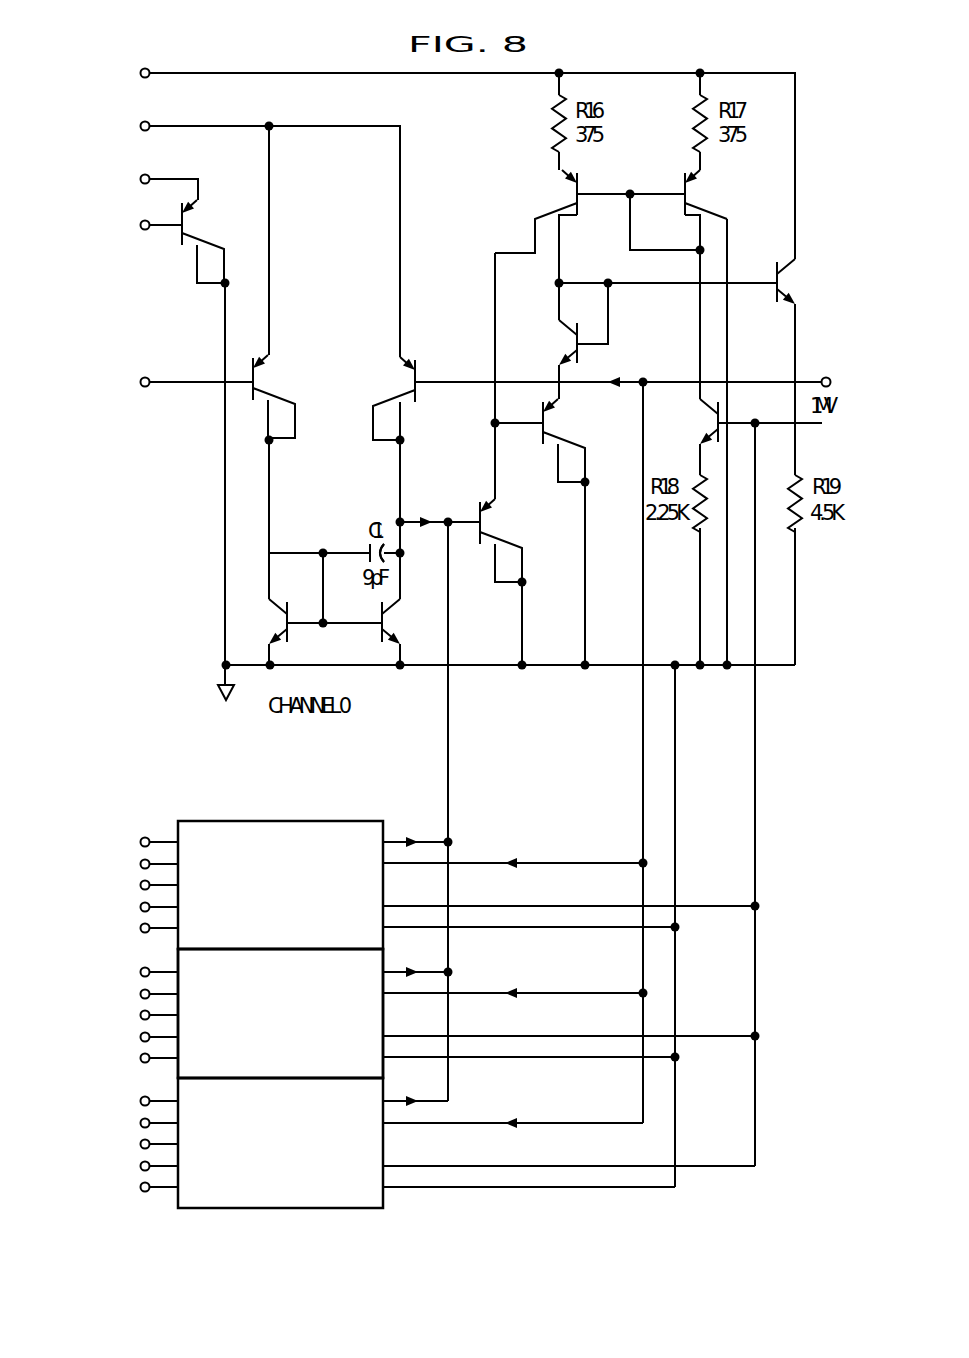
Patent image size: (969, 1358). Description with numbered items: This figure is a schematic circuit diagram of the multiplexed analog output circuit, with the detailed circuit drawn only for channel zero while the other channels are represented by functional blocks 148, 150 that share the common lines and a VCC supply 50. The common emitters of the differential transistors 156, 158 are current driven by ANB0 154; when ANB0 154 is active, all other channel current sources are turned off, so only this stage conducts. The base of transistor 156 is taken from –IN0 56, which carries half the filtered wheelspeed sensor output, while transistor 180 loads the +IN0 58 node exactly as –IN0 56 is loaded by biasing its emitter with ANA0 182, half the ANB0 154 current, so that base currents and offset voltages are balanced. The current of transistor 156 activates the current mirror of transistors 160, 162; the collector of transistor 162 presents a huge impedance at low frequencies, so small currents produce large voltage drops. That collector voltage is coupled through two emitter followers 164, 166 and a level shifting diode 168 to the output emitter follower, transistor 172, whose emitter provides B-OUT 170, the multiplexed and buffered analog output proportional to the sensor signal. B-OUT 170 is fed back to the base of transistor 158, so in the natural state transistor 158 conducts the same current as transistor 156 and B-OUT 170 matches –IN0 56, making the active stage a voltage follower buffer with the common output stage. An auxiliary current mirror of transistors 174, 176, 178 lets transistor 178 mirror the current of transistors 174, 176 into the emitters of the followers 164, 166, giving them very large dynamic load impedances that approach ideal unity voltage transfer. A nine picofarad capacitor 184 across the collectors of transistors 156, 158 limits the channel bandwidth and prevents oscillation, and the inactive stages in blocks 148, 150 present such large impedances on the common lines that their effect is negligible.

The VCC supply terminal 50 is at (126, 62).
The ANB0 154 is at (110, 114).
The ANA0 182 is at (102, 166).
The +IN0 58 is at (102, 214).
The –IN0 56 is at (118, 370).
The transistor 180 is at (197, 246).
The transistor 156 is at (265, 403).
The transistor 158 is at (405, 365).
The emitter follower 164 is at (492, 504).
The emitter follower 166 is at (558, 405).
The level shifting diode 168 is at (586, 350).
The transistor 178 is at (575, 186).
The transistor 176 is at (697, 212).
The transistor 172 is at (790, 262).
The transistor 174 is at (720, 442).
The transistor 160 is at (272, 604).
The transistor 162 is at (386, 644).
The B-OUT 170 is at (810, 356).
The capacitor 184 is at (353, 529).
The functional block 148 is at (266, 820).
The functional block 150 is at (386, 1030).